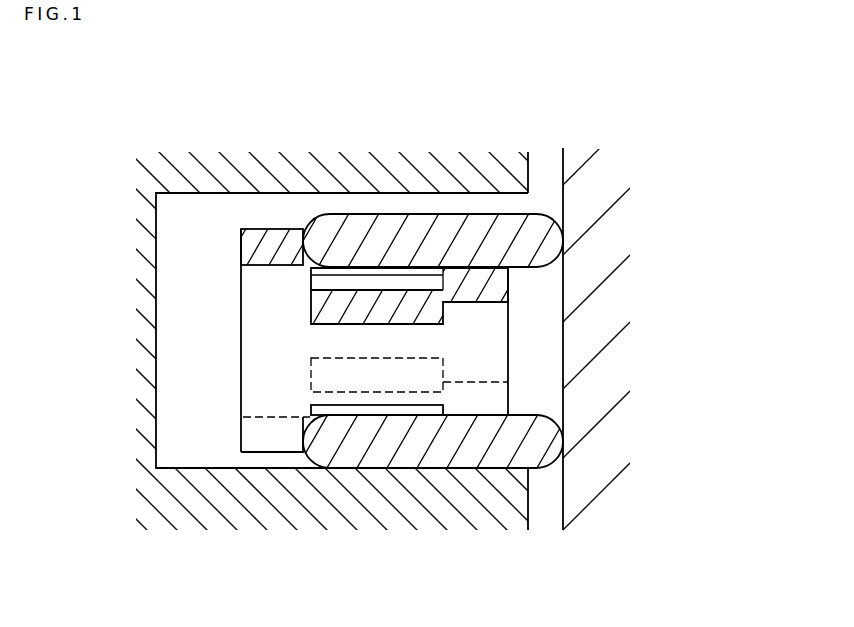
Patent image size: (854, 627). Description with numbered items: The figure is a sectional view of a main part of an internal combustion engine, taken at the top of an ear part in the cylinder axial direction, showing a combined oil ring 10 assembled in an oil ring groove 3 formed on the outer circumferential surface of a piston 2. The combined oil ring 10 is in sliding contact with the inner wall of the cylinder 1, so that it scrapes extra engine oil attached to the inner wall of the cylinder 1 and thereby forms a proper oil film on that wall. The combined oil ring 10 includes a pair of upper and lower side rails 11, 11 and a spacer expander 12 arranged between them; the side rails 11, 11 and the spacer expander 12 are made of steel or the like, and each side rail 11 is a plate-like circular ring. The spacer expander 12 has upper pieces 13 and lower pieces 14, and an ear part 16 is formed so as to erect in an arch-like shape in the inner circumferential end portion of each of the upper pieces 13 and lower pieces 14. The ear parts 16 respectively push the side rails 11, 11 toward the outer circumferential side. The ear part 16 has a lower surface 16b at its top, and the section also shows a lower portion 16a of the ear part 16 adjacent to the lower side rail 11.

The cylinder 1 is at (598, 202).
The piston 2 is at (383, 173).
The oil ring groove 3 is at (157, 380).
The combined oil ring 10 is at (507, 341).
The side rail 11 is at (537, 237).
The spacer expander 12 is at (472, 343).
The upper piece 13 is at (485, 283).
The lower piece 14 is at (492, 398).
The ear part 16 is at (189, 329).
The lower retainer portion 16a is at (312, 418).
The lower surface of the ear part 16b is at (305, 267).